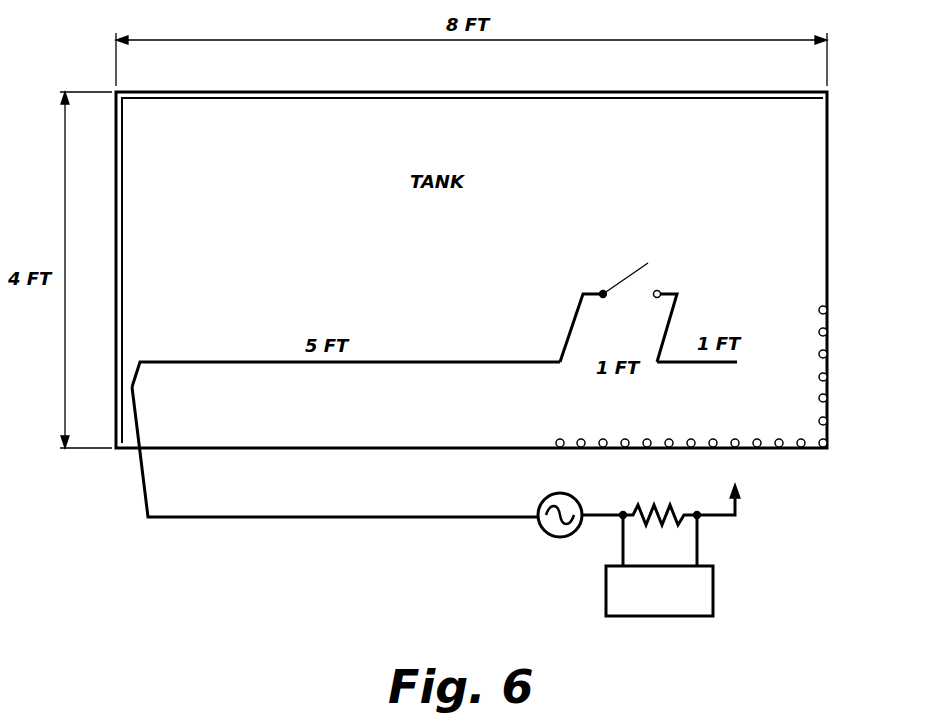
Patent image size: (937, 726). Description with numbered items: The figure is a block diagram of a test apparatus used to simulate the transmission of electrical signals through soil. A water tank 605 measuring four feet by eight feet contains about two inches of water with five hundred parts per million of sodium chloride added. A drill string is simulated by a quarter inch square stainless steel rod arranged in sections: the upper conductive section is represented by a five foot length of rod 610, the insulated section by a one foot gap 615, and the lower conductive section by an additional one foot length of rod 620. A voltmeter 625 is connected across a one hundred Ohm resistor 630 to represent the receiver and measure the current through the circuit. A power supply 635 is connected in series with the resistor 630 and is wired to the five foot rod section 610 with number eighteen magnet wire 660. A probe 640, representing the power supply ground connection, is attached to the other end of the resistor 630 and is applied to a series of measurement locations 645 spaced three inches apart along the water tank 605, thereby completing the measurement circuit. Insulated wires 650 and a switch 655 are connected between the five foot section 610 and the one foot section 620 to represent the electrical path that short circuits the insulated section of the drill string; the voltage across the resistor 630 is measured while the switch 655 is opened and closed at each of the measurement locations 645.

The water tank 605 is at (560, 118).
The rod 610 is at (400, 362).
The gap 615 is at (580, 360).
The rod 620 is at (697, 364).
The voltmeter 625 is at (713, 588).
The resistor 630 is at (670, 520).
The power supply 635 is at (538, 536).
The probe 640 is at (740, 505).
The measurement locations 645 is at (827, 306).
The insulated wires 650 is at (670, 330).
The switch 655 is at (620, 277).
The magnet wire 660 is at (303, 515).